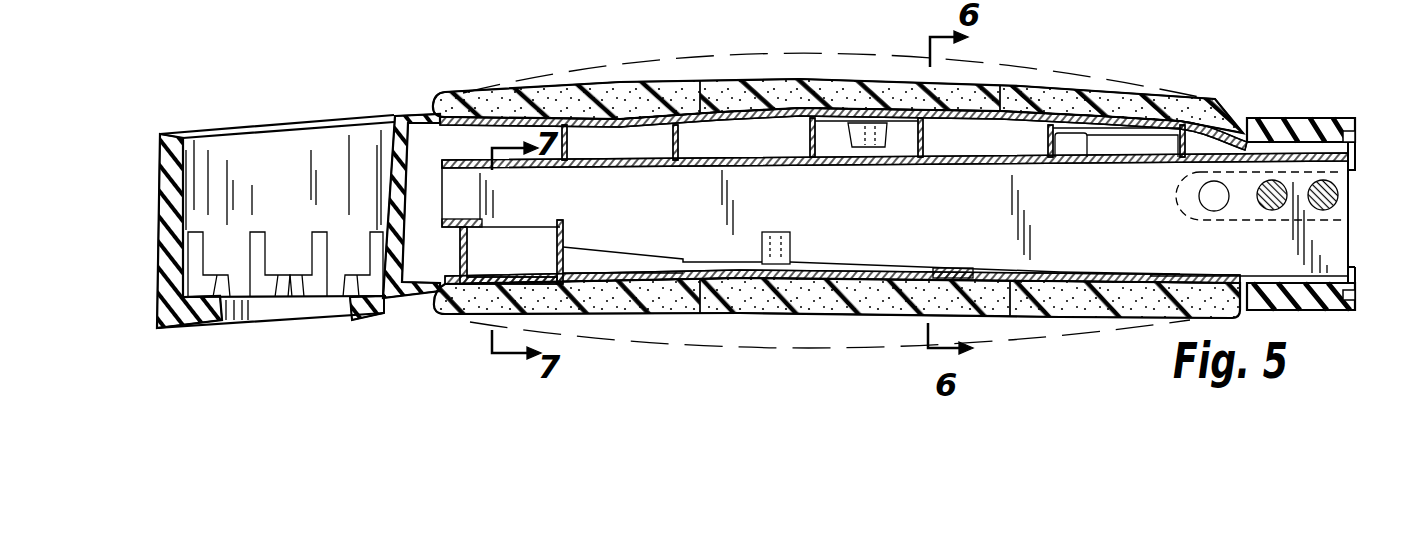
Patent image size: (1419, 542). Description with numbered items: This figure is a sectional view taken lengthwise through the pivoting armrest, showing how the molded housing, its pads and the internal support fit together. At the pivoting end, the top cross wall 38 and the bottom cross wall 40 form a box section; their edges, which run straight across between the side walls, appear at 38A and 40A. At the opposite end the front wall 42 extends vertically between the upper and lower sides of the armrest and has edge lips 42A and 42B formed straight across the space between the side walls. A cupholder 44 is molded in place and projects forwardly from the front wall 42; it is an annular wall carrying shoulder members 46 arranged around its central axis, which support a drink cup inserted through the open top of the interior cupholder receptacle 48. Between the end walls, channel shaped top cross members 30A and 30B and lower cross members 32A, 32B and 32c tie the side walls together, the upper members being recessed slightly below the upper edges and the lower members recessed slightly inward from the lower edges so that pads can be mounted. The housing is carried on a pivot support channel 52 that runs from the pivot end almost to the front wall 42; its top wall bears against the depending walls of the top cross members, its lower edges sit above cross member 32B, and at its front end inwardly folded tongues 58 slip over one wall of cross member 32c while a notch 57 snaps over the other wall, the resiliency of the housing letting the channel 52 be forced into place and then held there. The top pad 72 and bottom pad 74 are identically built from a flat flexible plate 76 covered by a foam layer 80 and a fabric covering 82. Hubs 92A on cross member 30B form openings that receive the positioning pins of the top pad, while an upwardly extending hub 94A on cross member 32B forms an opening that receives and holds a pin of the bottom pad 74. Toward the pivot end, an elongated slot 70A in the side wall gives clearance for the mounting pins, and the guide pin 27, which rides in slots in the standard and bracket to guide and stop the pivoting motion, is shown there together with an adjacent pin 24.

The screw 24 is at (1263, 210).
The guide pin 27 is at (1338, 190).
The top cross member 30A is at (1087, 158).
The top cross member 30B is at (886, 158).
The lower cross member 32A is at (997, 267).
The lower cross member 32B is at (728, 272).
The lower cross member 32c is at (527, 277).
The top cross wall 38 is at (1273, 117).
The edge of top cross wall 38A is at (1233, 100).
The bottom cross wall 40 is at (1331, 312).
The edge of bottom cross wall 40A is at (1243, 307).
The front wall 42 is at (405, 206).
The edge lip 42A is at (427, 113).
The edge lip 42B is at (417, 306).
The cupholder 44 is at (165, 208).
The shoulder members 46 is at (357, 267).
The cupholder receptacle 48 is at (245, 207).
The pivot support channel 52 is at (844, 83).
The notch 57 is at (627, 150).
The tongues 58 is at (442, 208).
The elongated slot 70A is at (1259, 218).
The top pad 72 is at (1007, 57).
The bottom pad 74 is at (678, 313).
The flat flexible plate 76 is at (777, 118).
The foam layer 80 is at (765, 90).
The fabric covering 82 is at (1027, 87).
The hubs 92A is at (892, 143).
The boss 94A is at (790, 240).